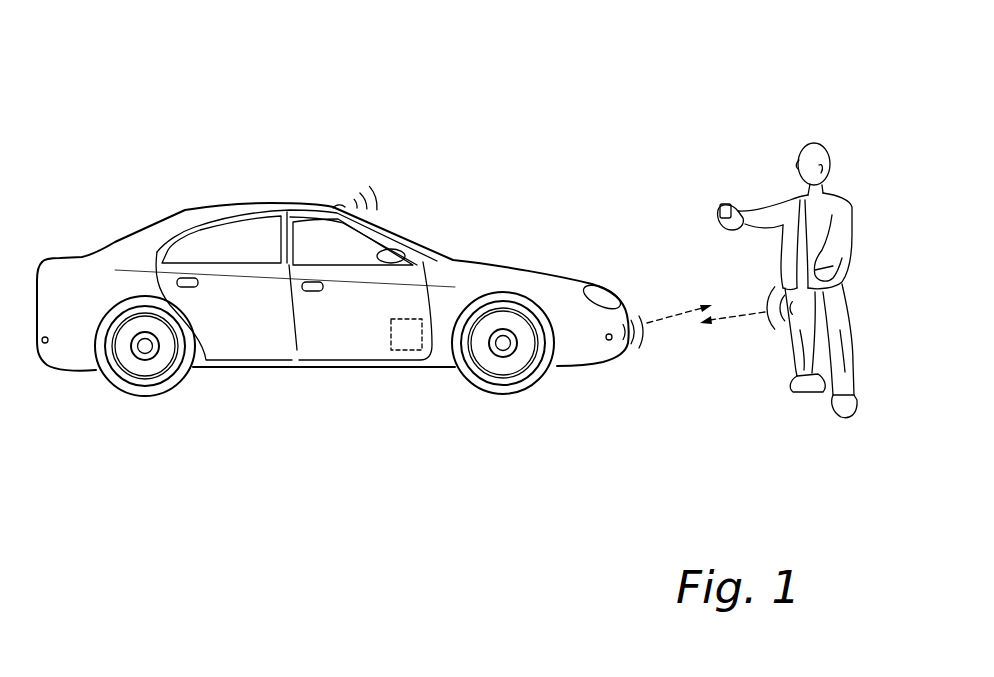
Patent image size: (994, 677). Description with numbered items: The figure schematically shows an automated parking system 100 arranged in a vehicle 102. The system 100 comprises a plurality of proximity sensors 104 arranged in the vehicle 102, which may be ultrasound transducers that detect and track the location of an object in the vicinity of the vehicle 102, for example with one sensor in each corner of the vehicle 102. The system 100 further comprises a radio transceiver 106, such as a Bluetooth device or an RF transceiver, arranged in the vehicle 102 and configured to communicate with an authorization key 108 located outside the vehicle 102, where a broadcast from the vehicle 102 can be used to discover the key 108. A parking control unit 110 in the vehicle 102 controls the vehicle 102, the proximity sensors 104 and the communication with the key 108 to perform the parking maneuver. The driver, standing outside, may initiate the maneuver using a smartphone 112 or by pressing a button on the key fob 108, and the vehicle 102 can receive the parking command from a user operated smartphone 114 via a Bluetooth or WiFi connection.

The automated parking system 100 is at (586, 121).
The vehicle 102 is at (187, 218).
The proximity sensors 104 is at (46, 345).
The radio transceiver 106 is at (337, 207).
The authorization key 108 is at (830, 293).
The parking control unit 110 is at (410, 351).
The smartphone 112 is at (837, 180).
The smartphone 114 is at (722, 206).